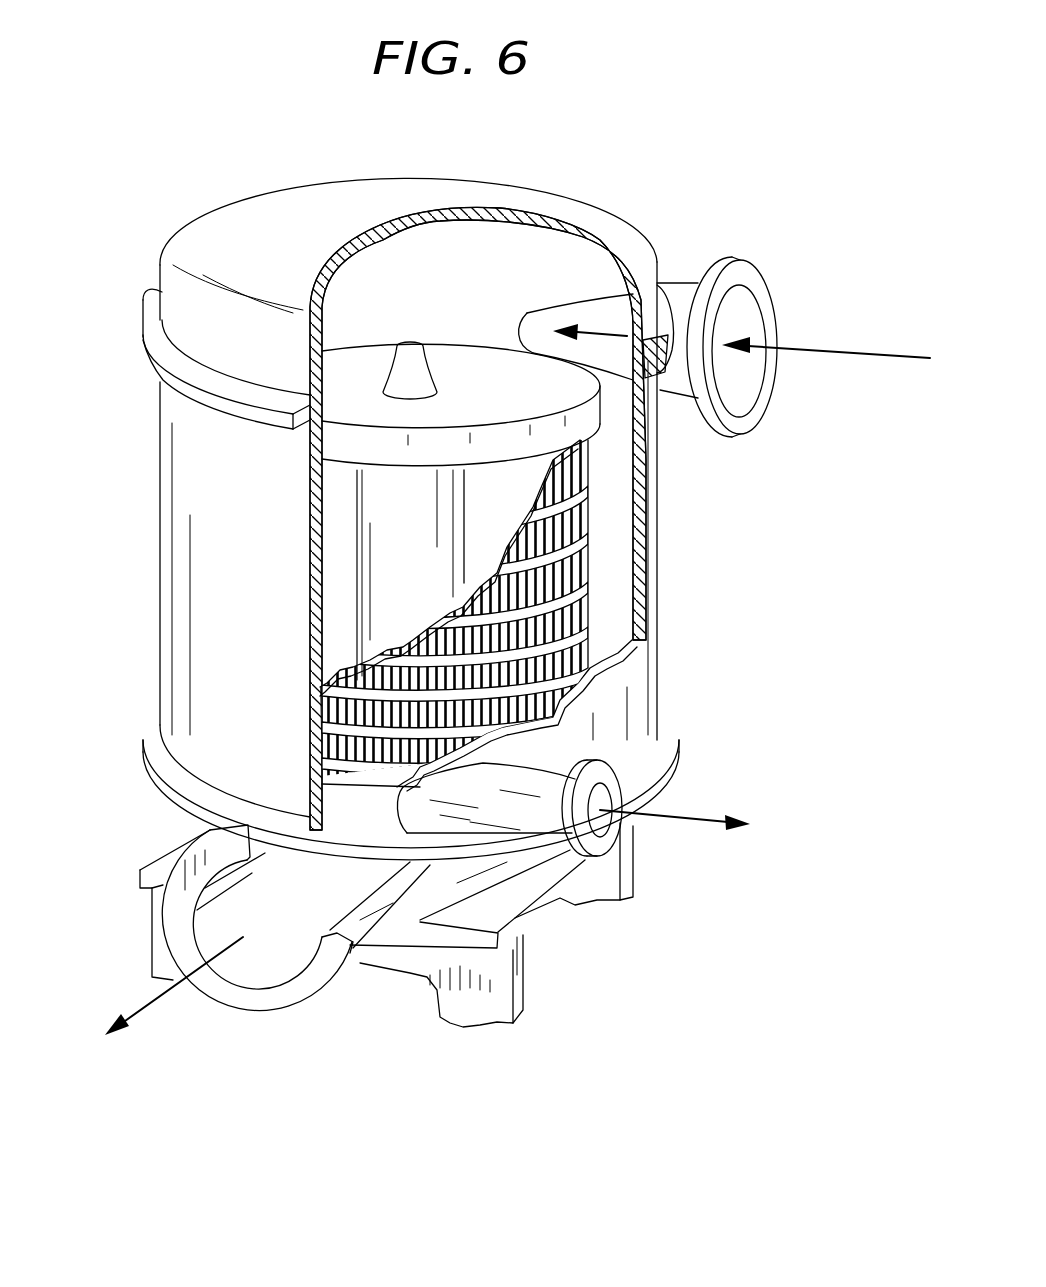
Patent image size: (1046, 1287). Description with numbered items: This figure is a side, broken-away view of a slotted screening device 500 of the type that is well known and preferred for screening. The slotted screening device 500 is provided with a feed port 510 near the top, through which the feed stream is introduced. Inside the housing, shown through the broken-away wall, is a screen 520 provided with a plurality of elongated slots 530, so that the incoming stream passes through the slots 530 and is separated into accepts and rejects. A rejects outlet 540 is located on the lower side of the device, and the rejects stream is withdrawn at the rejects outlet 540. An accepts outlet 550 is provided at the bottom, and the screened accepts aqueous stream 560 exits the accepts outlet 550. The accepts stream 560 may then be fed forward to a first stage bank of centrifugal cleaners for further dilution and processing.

The slotted screening device 500 is at (108, 478).
The feed port 510 is at (790, 408).
The screen 520 is at (590, 538).
The slots 530 is at (575, 642).
The rejects outlet 540 is at (662, 858).
The accepts outlet 550 is at (225, 1052).
The accepts stream 560 is at (148, 1000).